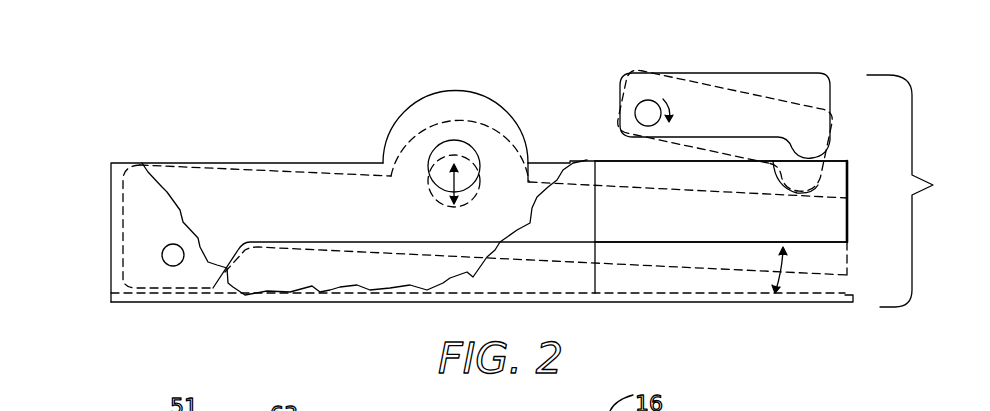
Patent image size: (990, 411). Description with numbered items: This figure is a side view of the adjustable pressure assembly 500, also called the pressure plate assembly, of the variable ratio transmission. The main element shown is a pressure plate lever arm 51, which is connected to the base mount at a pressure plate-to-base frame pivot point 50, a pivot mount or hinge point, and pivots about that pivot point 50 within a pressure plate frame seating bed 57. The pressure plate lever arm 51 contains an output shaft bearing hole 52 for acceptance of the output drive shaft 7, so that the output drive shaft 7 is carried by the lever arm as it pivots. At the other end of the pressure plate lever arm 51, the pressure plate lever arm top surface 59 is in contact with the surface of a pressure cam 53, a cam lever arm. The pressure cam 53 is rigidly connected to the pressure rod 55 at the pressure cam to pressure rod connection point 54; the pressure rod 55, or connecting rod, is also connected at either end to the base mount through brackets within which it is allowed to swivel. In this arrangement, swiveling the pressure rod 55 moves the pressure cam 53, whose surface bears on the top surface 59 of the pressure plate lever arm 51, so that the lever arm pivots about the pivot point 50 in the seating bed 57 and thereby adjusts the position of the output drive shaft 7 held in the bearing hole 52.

The output drive shaft 7 is at (431, 140).
The pressure plate-to-base frame pivot point 50 is at (173, 255).
The pressure plate lever arm 51 is at (433, 95).
The output shaft bearing hole 52 is at (427, 157).
The pressure cam 53 is at (773, 73).
The pressure cam to pressure rod connection point 54 is at (648, 113).
The pressure rod 55 is at (638, 100).
The pressure plate frame seating bed 57 is at (118, 161).
The pressure plate lever arm top surface 59 is at (843, 162).
The adjustable pressure assembly 500 is at (926, 191).